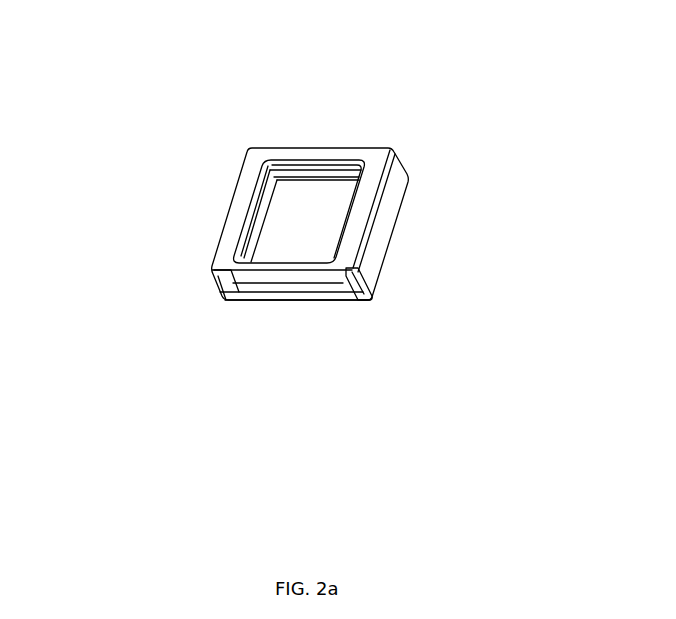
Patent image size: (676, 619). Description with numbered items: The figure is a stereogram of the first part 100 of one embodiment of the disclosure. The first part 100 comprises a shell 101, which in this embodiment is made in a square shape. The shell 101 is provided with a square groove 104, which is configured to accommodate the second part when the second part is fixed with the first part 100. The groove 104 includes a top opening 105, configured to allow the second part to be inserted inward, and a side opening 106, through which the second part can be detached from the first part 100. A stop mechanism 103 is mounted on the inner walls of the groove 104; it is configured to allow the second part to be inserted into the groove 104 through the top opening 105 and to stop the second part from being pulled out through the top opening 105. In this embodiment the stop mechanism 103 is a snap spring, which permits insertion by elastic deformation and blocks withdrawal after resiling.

The first part 100 is at (423, 203).
The shell 101 is at (255, 168).
The stop mechanism 103 is at (258, 220).
The groove 104 is at (310, 225).
The top opening 105 is at (325, 193).
The side opening 106 is at (298, 280).